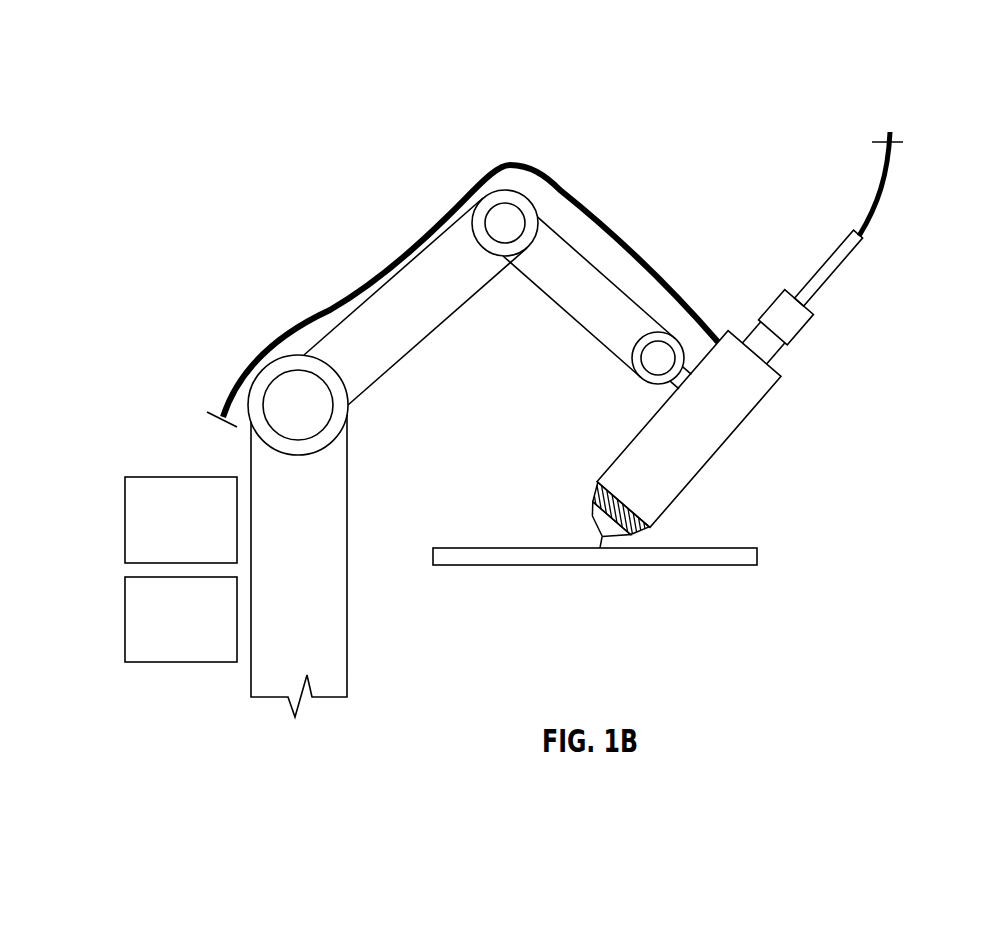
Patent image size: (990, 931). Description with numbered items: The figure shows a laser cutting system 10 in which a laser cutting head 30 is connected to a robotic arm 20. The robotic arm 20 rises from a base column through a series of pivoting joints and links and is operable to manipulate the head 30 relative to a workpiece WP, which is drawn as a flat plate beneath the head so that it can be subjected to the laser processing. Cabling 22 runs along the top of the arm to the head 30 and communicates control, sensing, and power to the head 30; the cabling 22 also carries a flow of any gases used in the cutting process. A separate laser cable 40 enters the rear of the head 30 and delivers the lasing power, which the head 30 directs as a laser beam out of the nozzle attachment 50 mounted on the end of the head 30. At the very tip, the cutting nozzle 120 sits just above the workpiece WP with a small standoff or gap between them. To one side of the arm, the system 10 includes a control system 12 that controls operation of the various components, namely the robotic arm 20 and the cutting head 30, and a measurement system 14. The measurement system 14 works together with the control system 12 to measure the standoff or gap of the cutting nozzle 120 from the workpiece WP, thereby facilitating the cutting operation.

The laser cutting system 10 is at (263, 112).
The control system 12 is at (125, 498).
The measurement system 14 is at (125, 599).
The robotic arm 20 is at (351, 489).
The cabling 22 is at (374, 279).
The laser cutting head 30 is at (785, 426).
The laser cable 40 is at (883, 197).
The nozzle attachment 50 is at (574, 522).
The cutting nozzle 120 is at (600, 548).
The workpiece WP is at (757, 562).